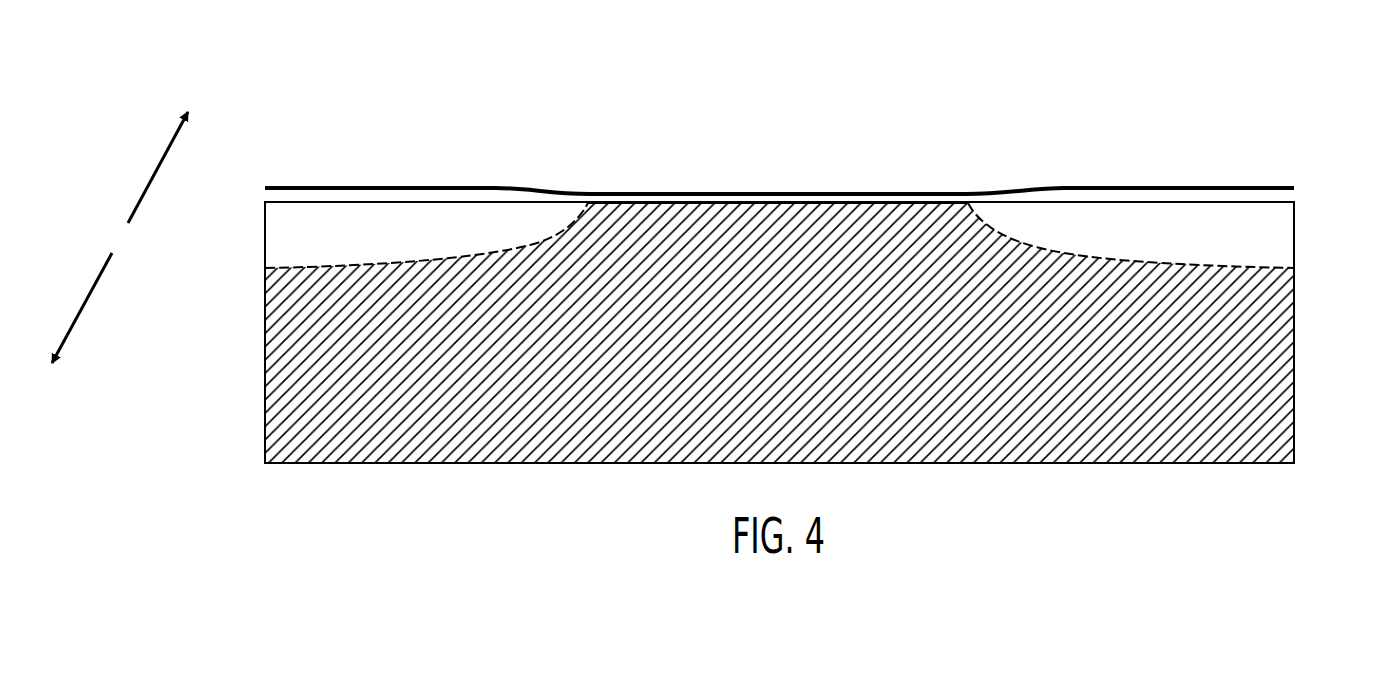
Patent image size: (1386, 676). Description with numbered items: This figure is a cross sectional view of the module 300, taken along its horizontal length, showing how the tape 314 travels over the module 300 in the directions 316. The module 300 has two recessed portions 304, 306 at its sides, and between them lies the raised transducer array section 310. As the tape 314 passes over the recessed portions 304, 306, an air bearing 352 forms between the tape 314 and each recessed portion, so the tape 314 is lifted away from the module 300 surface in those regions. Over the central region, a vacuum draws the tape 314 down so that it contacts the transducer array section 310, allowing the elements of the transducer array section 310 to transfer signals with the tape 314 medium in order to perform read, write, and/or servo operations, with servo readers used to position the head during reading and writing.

The module 300 is at (1294, 366).
The recessed portion 304 is at (412, 260).
The recessed portion 306 is at (1145, 262).
The transducer array section 310 is at (767, 202).
The tape 314 is at (377, 185).
The directions 316 is at (155, 172).
The air bearing 352 is at (462, 230).